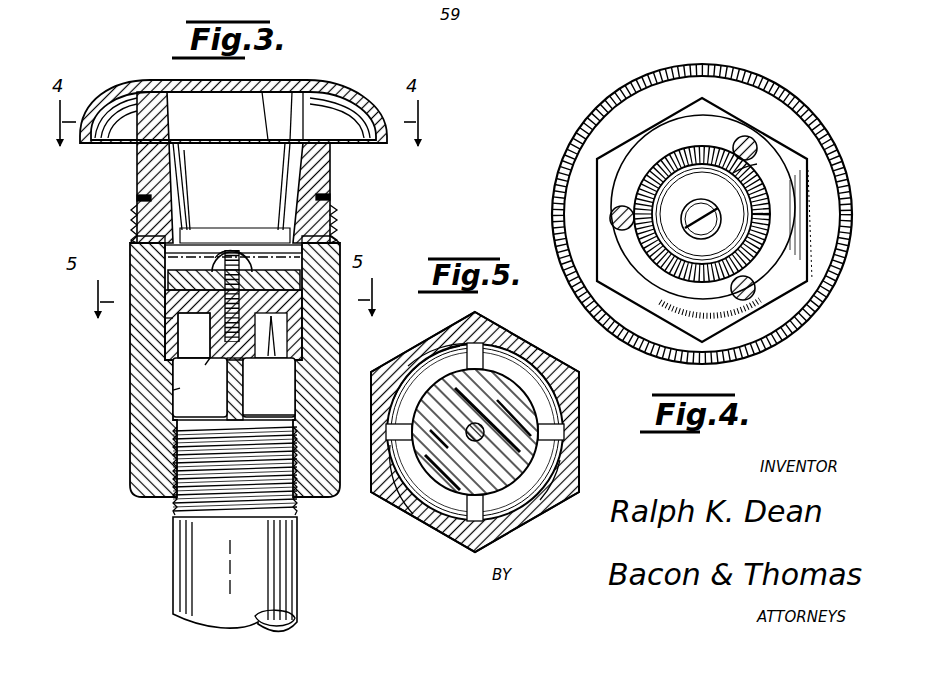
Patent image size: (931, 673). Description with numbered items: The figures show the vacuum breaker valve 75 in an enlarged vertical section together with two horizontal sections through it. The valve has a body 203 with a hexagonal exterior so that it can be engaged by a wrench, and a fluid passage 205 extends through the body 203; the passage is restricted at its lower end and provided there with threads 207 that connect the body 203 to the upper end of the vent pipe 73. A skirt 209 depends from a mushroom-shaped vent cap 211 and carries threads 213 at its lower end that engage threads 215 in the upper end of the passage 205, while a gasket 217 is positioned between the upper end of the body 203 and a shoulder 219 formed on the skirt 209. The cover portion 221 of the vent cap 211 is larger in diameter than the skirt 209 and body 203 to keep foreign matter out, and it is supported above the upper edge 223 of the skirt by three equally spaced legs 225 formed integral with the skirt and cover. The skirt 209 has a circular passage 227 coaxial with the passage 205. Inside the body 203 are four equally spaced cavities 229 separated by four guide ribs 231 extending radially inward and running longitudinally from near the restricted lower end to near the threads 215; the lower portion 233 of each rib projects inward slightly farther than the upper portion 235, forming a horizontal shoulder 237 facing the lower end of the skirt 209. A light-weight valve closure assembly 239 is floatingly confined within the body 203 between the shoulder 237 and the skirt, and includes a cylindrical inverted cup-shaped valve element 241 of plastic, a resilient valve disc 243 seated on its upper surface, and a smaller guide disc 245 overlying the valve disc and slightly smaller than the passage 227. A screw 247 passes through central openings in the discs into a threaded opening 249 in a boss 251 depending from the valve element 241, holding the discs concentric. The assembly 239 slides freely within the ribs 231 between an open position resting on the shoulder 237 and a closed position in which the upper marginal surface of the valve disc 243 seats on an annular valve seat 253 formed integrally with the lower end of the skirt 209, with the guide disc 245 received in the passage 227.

In FIG. 3, the vent pipe 73 is at (180, 552).
In FIG. 3, the vacuum breaker valve 75 is at (342, 366).
In FIG. 5, the vacuum breaker valve 75 is at (405, 524).
In FIG. 4, the vacuum breaker valve 75 is at (592, 198).
In FIG. 3, the body 203 is at (140, 425).
In FIG. 5, the body 203 is at (495, 332).
In FIG. 4, the body 203 is at (598, 246).
In FIG. 3, the fluid passage 205 is at (284, 406).
In FIG. 3, the threads 207 is at (178, 470).
In FIG. 3, the skirt 209 is at (331, 168).
In FIG. 3, the vent cap 211 is at (325, 79).
In FIG. 4, the vent cap 211 is at (606, 100).
In FIG. 3, the threads 213 is at (329, 218).
In FIG. 3, the threads 215 is at (138, 222).
In FIG. 3, the gasket 217 is at (137, 197).
In FIG. 3, the shoulder 219 is at (329, 197).
In FIG. 3, the cover portion 221 is at (122, 92).
In FIG. 4, the cover portion 221 is at (568, 170).
In FIG. 3, the upper edge 223 is at (308, 140).
In FIG. 3, the legs 225 is at (267, 128).
In FIG. 4, the legs 225 is at (746, 136).
In FIG. 3, the circular passage 227 is at (150, 166).
In FIG. 4, the circular passage 227 is at (750, 170).
In FIG. 5, the cavities 229 is at (526, 366).
In FIG. 3, the guide ribs 231 is at (240, 248).
In FIG. 5, the guide ribs 231 is at (470, 350).
In FIG. 3, the lower portion 233 is at (226, 398).
In FIG. 3, the upper portion 235 is at (338, 264).
In FIG. 3, the horizontal shoulder 237 is at (166, 346).
In FIG. 3, the valve closure assembly 239 is at (233, 353).
In FIG. 5, the valve closure assembly 239 is at (540, 466).
In FIG. 4, the valve closure assembly 239 is at (692, 185).
In FIG. 3, the valve element 241 is at (300, 300).
In FIG. 5, the valve element 241 is at (420, 370).
In FIG. 3, the valve disc 243 is at (166, 258).
In FIG. 3, the guide disc 245 is at (300, 286).
In FIG. 4, the guide disc 245 is at (728, 200).
In FIG. 3, the screw 247 is at (232, 250).
In FIG. 5, the screw 247 is at (476, 442).
In FIG. 4, the screw 247 is at (694, 230).
In FIG. 3, the threaded opening 249 is at (196, 335).
In FIG. 5, the threaded opening 249 is at (493, 418).
In FIG. 3, the boss 251 is at (202, 376).
In FIG. 5, the boss 251 is at (468, 430).
In FIG. 3, the annular valve seat 253 is at (287, 240).